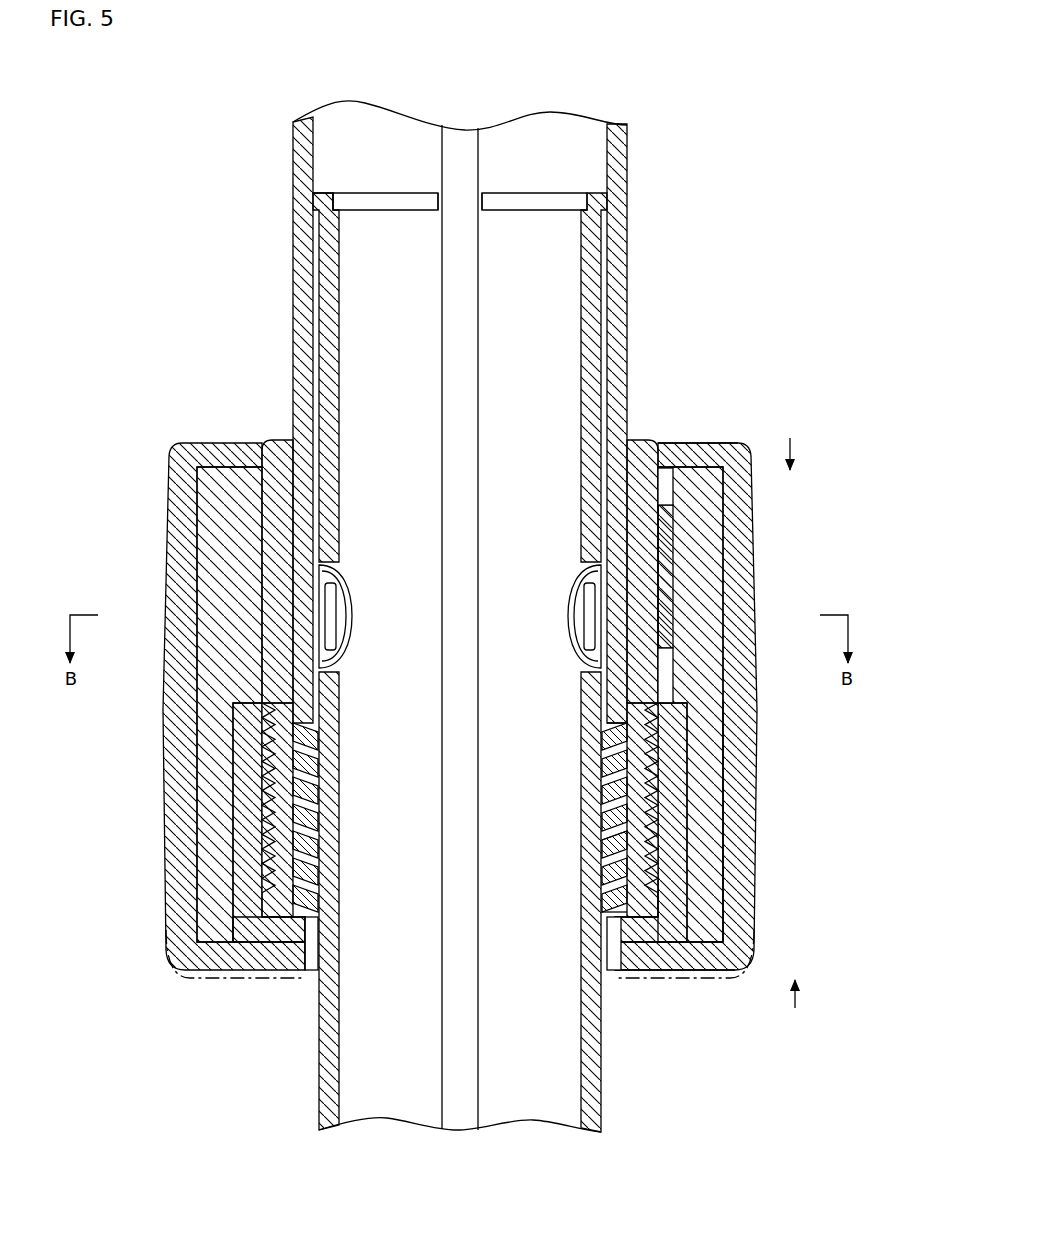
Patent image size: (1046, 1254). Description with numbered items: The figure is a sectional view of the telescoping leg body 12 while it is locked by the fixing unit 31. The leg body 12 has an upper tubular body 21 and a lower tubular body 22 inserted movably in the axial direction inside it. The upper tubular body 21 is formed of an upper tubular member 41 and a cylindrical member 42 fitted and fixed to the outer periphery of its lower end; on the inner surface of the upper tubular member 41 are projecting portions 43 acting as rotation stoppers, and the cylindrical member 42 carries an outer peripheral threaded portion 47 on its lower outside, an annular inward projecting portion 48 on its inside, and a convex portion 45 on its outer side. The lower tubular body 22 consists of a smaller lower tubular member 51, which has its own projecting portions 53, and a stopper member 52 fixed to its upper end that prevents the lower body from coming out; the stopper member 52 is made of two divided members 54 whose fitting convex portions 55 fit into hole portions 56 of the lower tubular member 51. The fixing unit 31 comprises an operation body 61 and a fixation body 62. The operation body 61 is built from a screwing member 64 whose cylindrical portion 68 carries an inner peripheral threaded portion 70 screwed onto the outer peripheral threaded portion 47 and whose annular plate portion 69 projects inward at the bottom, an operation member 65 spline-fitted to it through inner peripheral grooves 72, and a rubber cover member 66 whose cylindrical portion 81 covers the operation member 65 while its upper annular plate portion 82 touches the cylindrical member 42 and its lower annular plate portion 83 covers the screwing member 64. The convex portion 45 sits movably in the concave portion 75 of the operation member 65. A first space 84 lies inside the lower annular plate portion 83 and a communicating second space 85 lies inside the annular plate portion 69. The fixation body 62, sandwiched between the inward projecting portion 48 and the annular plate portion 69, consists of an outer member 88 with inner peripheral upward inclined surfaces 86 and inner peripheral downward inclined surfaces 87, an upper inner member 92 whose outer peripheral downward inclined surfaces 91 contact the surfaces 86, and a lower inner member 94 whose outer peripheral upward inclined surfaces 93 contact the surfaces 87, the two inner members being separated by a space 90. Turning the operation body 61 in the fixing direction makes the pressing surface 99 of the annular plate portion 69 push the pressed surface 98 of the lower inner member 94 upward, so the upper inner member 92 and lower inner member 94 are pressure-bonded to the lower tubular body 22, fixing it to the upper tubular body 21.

The leg body 12 is at (663, 79).
The upper tubular body 21 is at (641, 160).
The lower tubular body 22 is at (308, 1103).
The fixing unit 31 is at (735, 421).
The upper tubular member 41 is at (628, 206).
The cylindrical member 42 is at (645, 440).
The projecting portion 43 is at (460, 150).
The convex portion 45 is at (665, 540).
The outer peripheral threaded portion 47 is at (652, 770).
The inward projecting portion 48 is at (612, 718).
The lower tubular member 51 is at (320, 1055).
The stopper member 52 is at (310, 190).
The projecting portion 53 is at (470, 250).
The divided member 54 is at (358, 190).
The fitting convex portion 55 is at (322, 578).
The hole portion 56 is at (333, 585).
The operation body 61 is at (766, 498).
The fixation body 62 is at (628, 917).
The screwing member 64 is at (662, 885).
The operation member 65 is at (705, 880).
The cover member 66 is at (735, 856).
The cylindrical portion 68 is at (255, 830).
The annular plate portion 69 is at (265, 928).
The inner peripheral threaded portion 70 is at (622, 818).
The inner peripheral groove 72 is at (262, 706).
The concave portion 75 is at (665, 490).
The cylindrical portion 81 is at (750, 565).
The upper annular plate portion 82 is at (705, 455).
The lower annular plate portion 83 is at (662, 957).
The first space 84 is at (312, 957).
The second space 85 is at (310, 930).
The inner peripheral upward inclined surface 86 is at (615, 737).
The inner peripheral downward inclined surface 87 is at (612, 904).
The outer member 88 is at (643, 830).
The space 90 is at (610, 815).
The outer peripheral downward inclined surface 91 is at (668, 738).
The upper inner member 92 is at (648, 706).
The outer peripheral upward inclined surface 93 is at (636, 912).
The lower inner member 94 is at (610, 840).
The pressed surface 98 is at (618, 922).
The pressing surface 99 is at (630, 925).